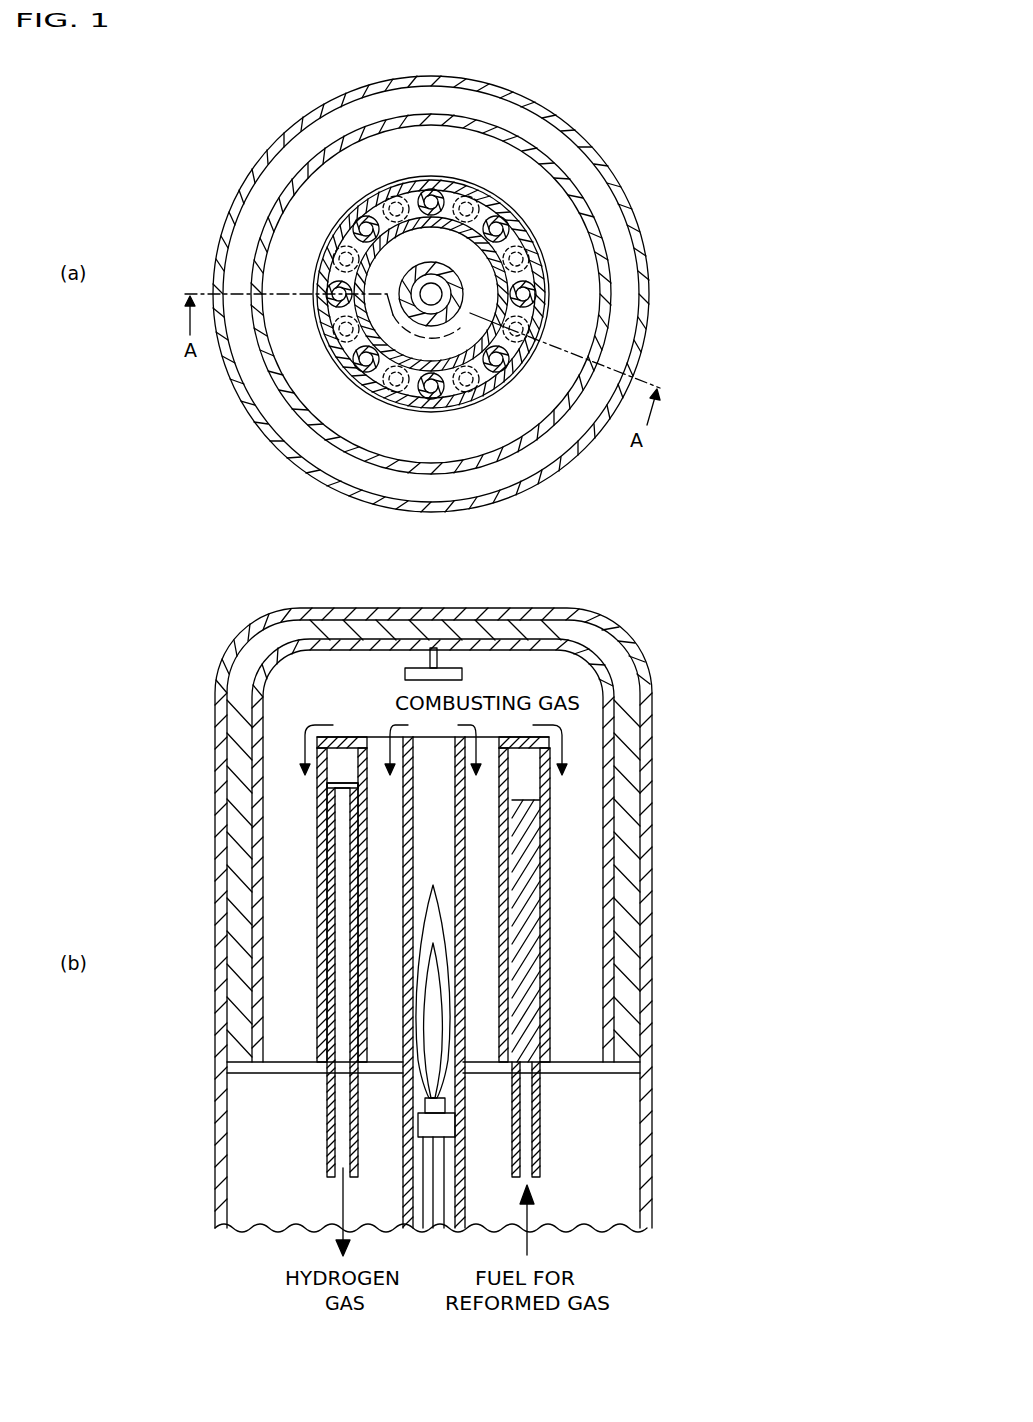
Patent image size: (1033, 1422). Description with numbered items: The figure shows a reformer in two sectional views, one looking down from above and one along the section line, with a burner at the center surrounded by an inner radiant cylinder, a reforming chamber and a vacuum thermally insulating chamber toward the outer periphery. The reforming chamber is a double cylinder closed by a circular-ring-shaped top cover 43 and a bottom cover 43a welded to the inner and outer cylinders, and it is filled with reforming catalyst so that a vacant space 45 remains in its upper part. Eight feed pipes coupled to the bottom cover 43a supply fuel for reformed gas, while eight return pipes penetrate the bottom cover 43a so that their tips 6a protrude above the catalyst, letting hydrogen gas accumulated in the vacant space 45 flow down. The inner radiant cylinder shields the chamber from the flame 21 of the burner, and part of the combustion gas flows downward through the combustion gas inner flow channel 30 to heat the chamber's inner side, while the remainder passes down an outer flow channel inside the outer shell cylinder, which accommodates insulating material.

The tips of the return pipes 6a is at (328, 791).
The flame 21 is at (450, 885).
The combustion gas inner flow channel 30 is at (400, 348).
The top cover 43 is at (353, 737).
The bottom cover 43a is at (232, 1068).
The vacant space 45 is at (528, 772).